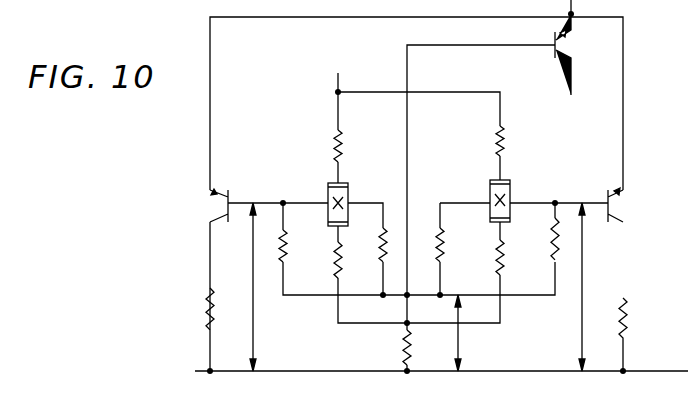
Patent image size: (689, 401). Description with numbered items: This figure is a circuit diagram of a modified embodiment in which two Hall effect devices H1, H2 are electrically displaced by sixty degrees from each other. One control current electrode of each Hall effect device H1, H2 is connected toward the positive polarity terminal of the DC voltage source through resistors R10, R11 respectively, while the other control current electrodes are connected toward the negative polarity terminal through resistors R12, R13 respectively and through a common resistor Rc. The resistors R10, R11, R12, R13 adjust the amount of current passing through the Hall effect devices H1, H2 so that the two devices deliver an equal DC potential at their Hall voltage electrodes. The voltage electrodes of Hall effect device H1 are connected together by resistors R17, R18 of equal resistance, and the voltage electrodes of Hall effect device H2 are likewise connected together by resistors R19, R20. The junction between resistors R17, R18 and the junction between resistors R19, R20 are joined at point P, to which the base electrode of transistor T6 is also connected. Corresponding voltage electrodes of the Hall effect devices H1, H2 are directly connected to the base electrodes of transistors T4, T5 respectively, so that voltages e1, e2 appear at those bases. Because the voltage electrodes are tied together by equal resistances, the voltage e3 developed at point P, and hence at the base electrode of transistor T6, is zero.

The transistor T4 is at (216, 190).
The transistor T5 is at (615, 192).
The transistor T6 is at (563, 38).
The Hall effect device H1 is at (328, 181).
The Hall effect device H2 is at (508, 178).
The resistor R10 is at (336, 132).
The resistor R11 is at (496, 138).
The resistor R12 is at (332, 265).
The resistor R13 is at (514, 262).
The resistor R17 is at (381, 200).
The resistor R18 is at (288, 258).
The resistor R19 is at (444, 258).
The resistor R20 is at (553, 265).
The resistor Rc is at (400, 348).
The point P is at (412, 293).
The voltage e1 is at (250, 287).
The voltage e2 is at (582, 287).
The voltage e3 is at (458, 333).